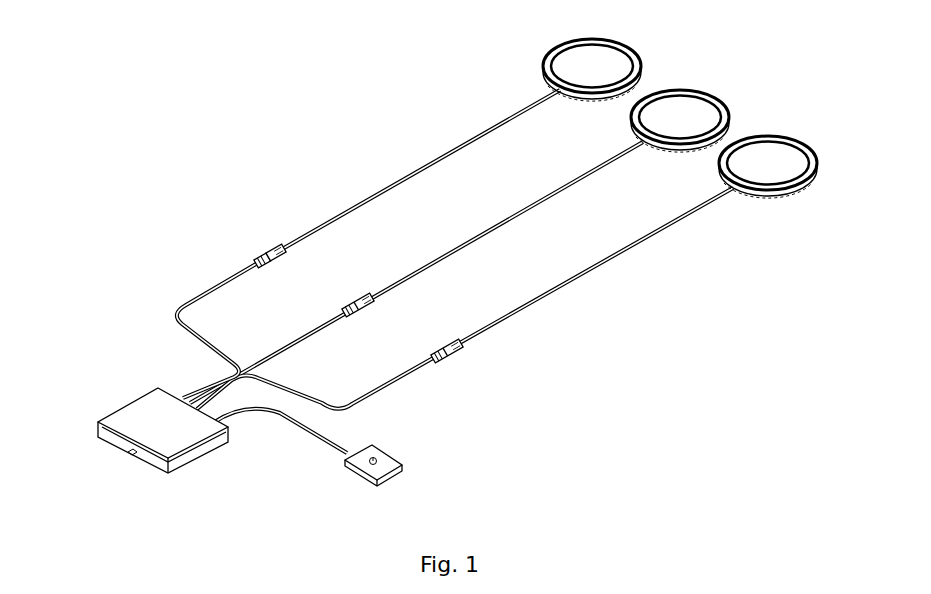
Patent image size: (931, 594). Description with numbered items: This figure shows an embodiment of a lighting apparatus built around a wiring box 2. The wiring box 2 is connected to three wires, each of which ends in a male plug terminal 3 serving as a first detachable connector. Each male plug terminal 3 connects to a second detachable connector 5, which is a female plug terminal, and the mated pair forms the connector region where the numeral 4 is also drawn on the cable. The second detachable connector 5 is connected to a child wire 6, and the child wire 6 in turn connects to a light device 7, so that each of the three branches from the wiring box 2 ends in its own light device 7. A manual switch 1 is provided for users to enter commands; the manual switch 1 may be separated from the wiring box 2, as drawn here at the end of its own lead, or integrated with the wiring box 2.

The manual switch 1 is at (363, 467).
The wiring box 2 is at (150, 423).
The male plug terminal 3 is at (218, 283).
The female connector 4 is at (255, 260).
The second detachable connector 5 is at (277, 248).
The child wire 6 is at (402, 178).
The light device 7 is at (552, 53).